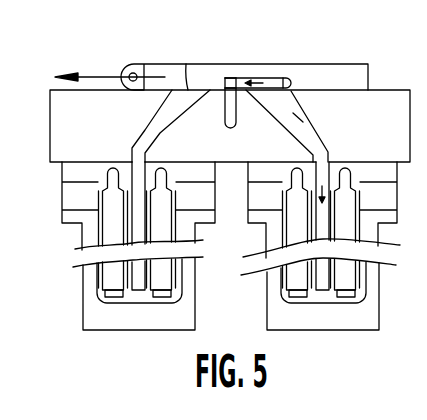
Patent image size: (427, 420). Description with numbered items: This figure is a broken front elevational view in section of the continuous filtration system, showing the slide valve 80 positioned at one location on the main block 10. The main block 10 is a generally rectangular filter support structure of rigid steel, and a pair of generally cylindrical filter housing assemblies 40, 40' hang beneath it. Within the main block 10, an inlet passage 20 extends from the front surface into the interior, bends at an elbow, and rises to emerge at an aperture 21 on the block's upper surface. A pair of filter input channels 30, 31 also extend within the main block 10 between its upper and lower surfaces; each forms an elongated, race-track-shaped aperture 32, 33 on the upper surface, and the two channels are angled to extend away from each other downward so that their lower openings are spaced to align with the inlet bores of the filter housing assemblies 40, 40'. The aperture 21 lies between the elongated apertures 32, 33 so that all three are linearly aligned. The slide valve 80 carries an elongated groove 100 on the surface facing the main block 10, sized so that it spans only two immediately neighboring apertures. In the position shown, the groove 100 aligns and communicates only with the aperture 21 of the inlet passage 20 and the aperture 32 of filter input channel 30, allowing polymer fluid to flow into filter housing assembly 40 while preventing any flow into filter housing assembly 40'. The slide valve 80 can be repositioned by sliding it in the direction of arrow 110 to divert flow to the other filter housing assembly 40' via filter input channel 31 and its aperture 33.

The main block 10 is at (63, 145).
The inlet passage 20 is at (240, 112).
The aperture 21 is at (226, 78).
The filter input channel 30 is at (304, 104).
The filter input channel 31 is at (162, 114).
The elongated aperture 32 is at (287, 78).
The elongated aperture 33 is at (186, 64).
The filter housing assembly 40 is at (323, 261).
The filter housing assembly 40' is at (132, 262).
The slide valve 80 is at (357, 66).
The groove 100 is at (257, 77).
The arrow 110 is at (94, 77).